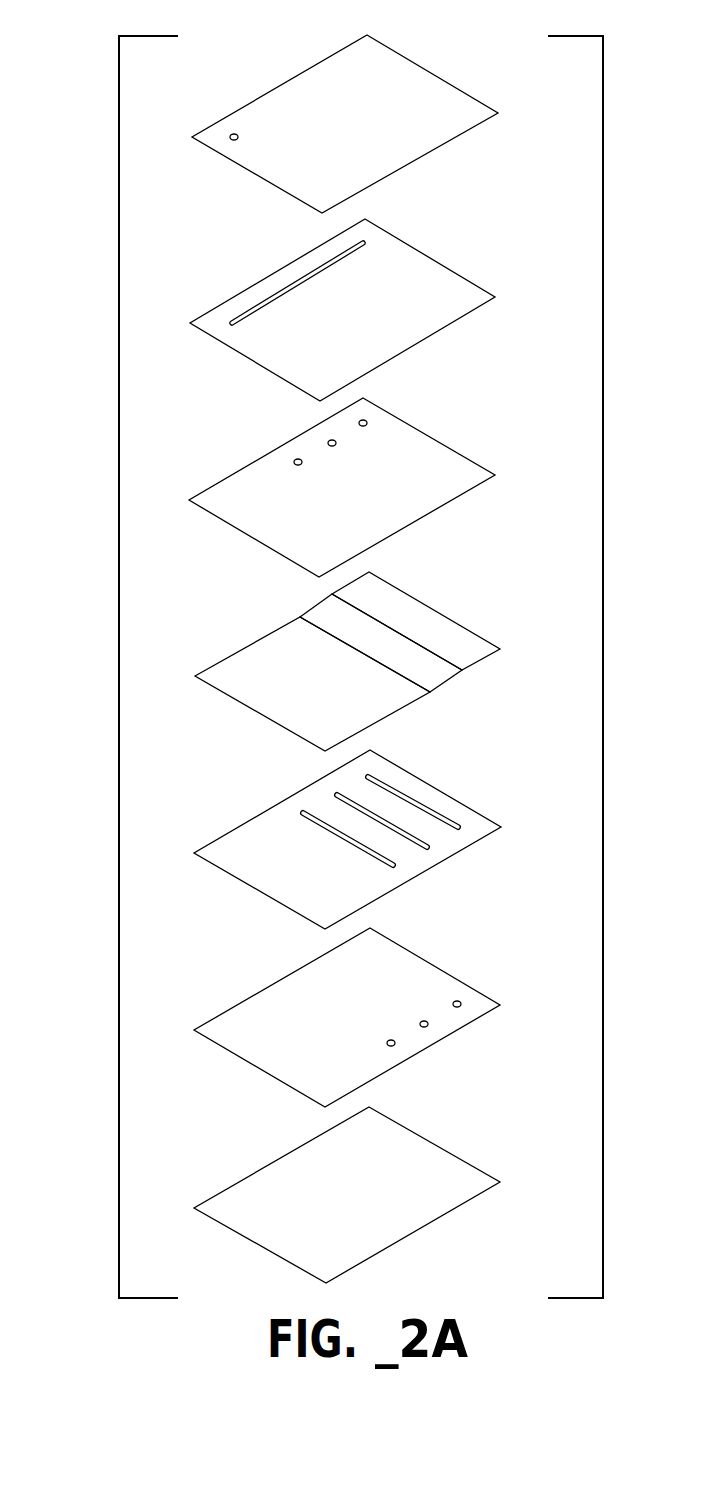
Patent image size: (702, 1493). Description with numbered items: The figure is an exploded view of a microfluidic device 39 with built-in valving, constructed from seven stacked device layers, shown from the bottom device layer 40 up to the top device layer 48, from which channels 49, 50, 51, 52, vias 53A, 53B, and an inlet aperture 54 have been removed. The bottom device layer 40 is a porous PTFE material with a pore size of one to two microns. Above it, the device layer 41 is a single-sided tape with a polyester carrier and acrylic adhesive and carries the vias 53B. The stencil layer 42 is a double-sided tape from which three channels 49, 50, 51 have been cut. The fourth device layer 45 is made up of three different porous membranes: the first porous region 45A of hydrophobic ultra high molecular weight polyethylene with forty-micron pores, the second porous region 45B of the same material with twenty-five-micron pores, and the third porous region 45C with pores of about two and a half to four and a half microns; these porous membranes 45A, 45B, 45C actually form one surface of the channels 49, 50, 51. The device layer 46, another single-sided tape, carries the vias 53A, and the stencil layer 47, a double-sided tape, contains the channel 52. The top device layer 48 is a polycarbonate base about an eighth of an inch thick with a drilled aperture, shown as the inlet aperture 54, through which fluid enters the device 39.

The microfluidic device 39 is at (117, 703).
The bottom device layer 40 is at (485, 1180).
The device layer 41 is at (485, 1002).
The stencil layer 42 is at (485, 825).
The fourth device layer 45 is at (355, 649).
The first porous region 45A is at (242, 653).
The second porous region 45B is at (317, 612).
The third porous region 45C is at (387, 593).
The device layer 46 is at (478, 470).
The stencil layer 47 is at (480, 295).
The top device layer 48 is at (482, 112).
The channel 49 is at (301, 811).
The channel 50 is at (335, 793).
The channel 51 is at (378, 780).
The channel 52 is at (243, 312).
The via 53A is at (293, 457).
The via 53B is at (397, 1043).
The inlet aperture 54 is at (232, 132).